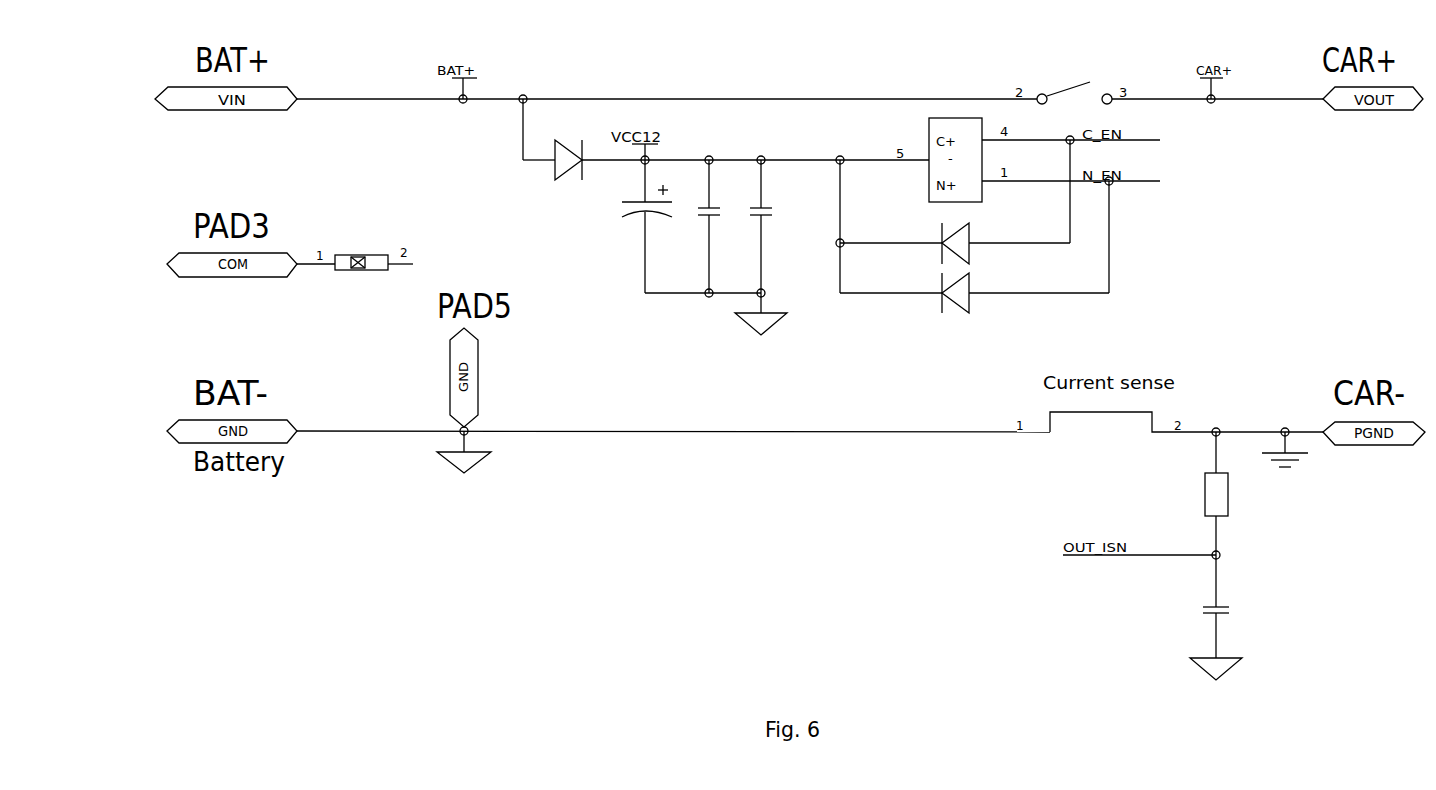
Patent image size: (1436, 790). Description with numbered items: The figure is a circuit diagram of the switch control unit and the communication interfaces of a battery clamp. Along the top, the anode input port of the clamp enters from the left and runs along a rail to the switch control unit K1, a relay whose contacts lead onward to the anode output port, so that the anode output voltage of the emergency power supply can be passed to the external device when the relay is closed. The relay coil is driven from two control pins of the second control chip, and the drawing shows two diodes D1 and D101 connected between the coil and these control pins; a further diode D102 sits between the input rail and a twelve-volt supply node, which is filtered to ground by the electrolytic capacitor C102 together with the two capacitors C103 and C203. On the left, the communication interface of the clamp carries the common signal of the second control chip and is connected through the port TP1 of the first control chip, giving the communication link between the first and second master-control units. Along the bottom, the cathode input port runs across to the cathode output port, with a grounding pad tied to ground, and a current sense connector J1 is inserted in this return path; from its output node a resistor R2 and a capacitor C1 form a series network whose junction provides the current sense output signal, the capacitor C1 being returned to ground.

The switch control unit K1 is at (1074, 83).
The diode D102 is at (552, 170).
The electrolytic capacitor C102 is at (638, 226).
The capacitor C103 is at (704, 226).
The capacitor C203 is at (756, 236).
The diode SS34 D1 is at (955, 243).
The diode SS34 D101 is at (974, 292).
The port of the first control chip TP1 is at (361, 265).
The current sense connector J1 is at (1133, 439).
The resistor R2 is at (1227, 493).
The capacitor C1 is at (1225, 606).